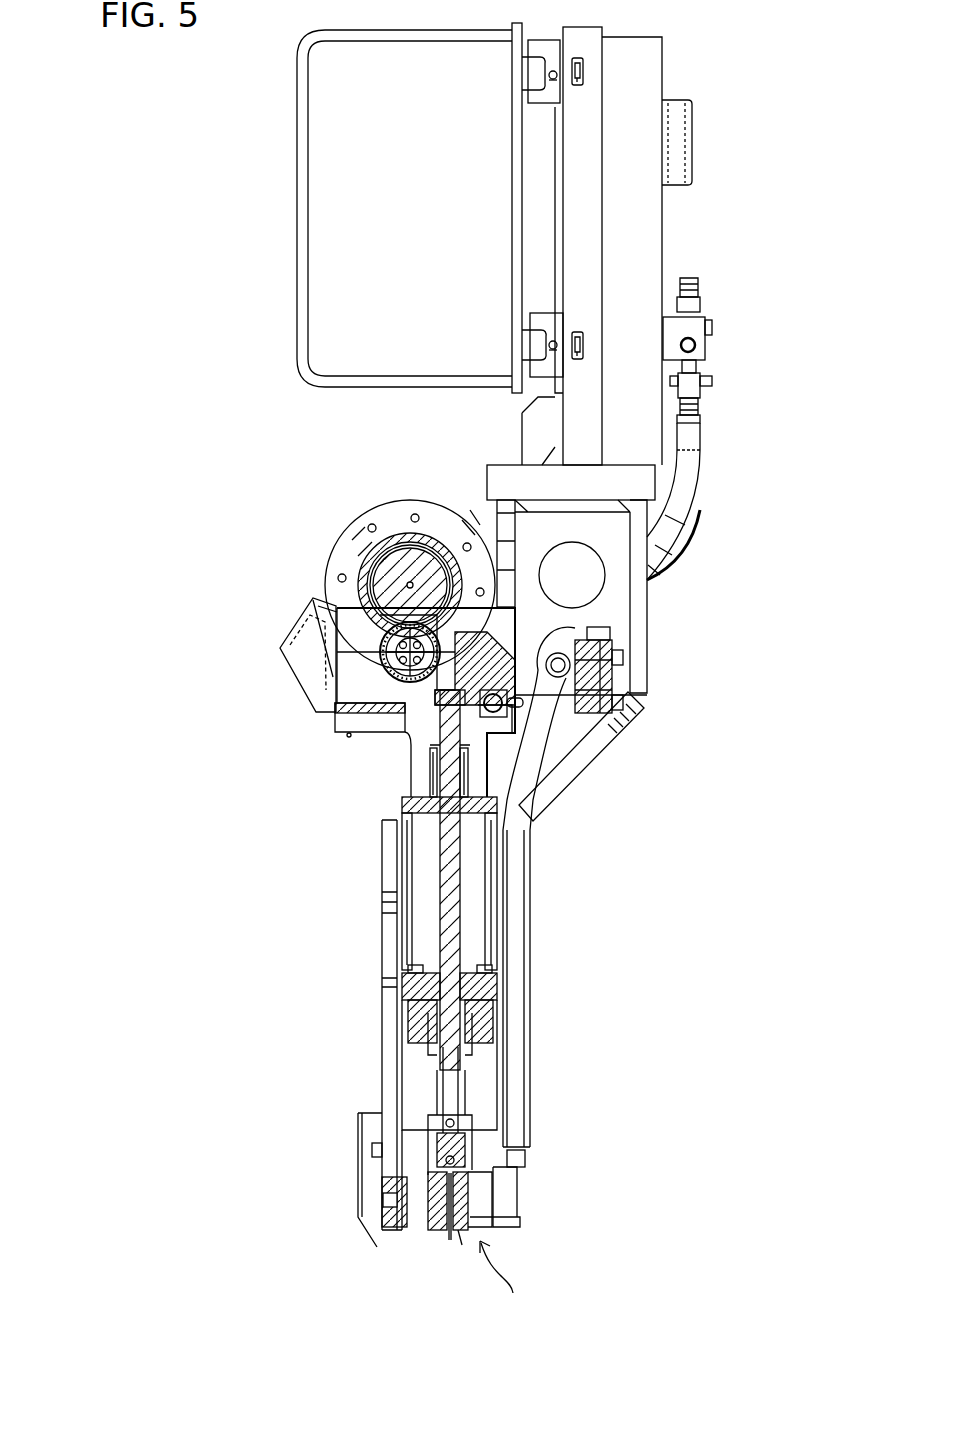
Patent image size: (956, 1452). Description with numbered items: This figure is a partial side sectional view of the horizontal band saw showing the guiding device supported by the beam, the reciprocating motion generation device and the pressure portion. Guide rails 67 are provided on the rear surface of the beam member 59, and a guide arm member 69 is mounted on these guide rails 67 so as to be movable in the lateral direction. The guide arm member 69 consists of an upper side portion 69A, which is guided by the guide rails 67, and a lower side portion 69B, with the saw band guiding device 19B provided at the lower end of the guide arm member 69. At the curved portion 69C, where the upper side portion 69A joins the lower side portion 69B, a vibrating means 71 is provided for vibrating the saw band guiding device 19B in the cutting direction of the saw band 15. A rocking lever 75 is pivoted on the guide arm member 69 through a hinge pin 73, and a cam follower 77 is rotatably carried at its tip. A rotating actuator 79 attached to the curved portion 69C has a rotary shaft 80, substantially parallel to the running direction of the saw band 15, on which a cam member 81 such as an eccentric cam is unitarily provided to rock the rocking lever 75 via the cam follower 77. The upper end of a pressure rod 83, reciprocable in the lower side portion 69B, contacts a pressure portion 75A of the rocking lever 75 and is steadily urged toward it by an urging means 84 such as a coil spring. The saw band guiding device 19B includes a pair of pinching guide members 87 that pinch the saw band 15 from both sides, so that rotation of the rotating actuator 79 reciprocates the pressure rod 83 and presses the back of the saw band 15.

The beam member 59 is at (297, 186).
The guide rails 67 is at (527, 75).
The upper side portion 69A is at (662, 222).
The guide arm member 69 is at (650, 590).
The lower side portion 69B is at (383, 970).
The curved portion 69C is at (595, 755).
The vibrating means 71 is at (493, 640).
The hinge pin 73 is at (537, 767).
The rocking lever 75 is at (415, 680).
The pressure portion 75A is at (437, 695).
The cam follower 77 is at (468, 667).
The rotating actuator 79 is at (342, 555).
The rotary shaft 80 is at (410, 585).
The cam member 81 is at (387, 600).
The pressure rod 83 is at (453, 937).
The urging means 84 is at (437, 767).
The pinching guide members 87 is at (462, 1200).
The saw band 15 is at (450, 1233).
The saw band guiding device 19B is at (515, 1284).